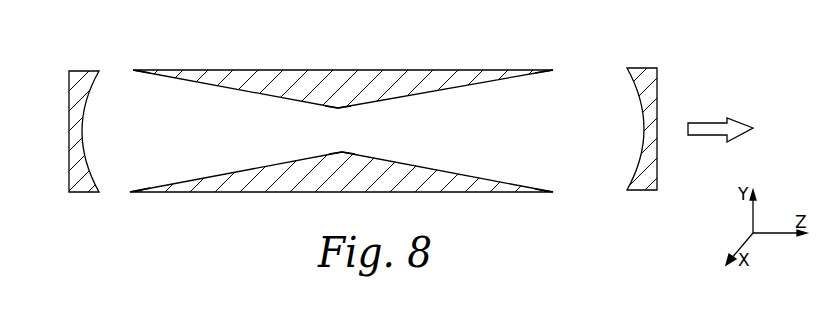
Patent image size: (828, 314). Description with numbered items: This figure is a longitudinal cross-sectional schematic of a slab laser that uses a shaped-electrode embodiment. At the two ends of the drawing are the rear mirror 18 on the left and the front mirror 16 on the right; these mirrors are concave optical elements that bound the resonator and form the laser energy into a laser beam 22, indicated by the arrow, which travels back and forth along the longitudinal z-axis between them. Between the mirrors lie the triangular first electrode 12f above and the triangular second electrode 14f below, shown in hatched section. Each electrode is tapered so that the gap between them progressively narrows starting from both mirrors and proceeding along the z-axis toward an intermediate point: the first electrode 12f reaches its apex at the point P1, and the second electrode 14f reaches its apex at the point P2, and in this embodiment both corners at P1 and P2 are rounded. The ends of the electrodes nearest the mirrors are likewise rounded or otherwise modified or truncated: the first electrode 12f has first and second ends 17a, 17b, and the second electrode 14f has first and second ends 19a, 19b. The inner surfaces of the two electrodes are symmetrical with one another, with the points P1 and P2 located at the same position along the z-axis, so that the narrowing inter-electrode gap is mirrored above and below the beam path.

The rear mirror 18 is at (69, 80).
The front mirror 16 is at (658, 87).
The triangular first electrode 12f is at (170, 70).
The triangular second electrode 14f is at (163, 194).
The second end of triangular first electrode 17b is at (133, 71).
The first end of triangular first electrode 17a is at (553, 70).
The second end of triangular second electrode 19b is at (133, 192).
The first end of triangular second electrode 19a is at (553, 191).
The intermediate point of first electrode P1 is at (338, 110).
The intermediate point of second electrode P2 is at (342, 151).
The laser beam 22 is at (708, 120).